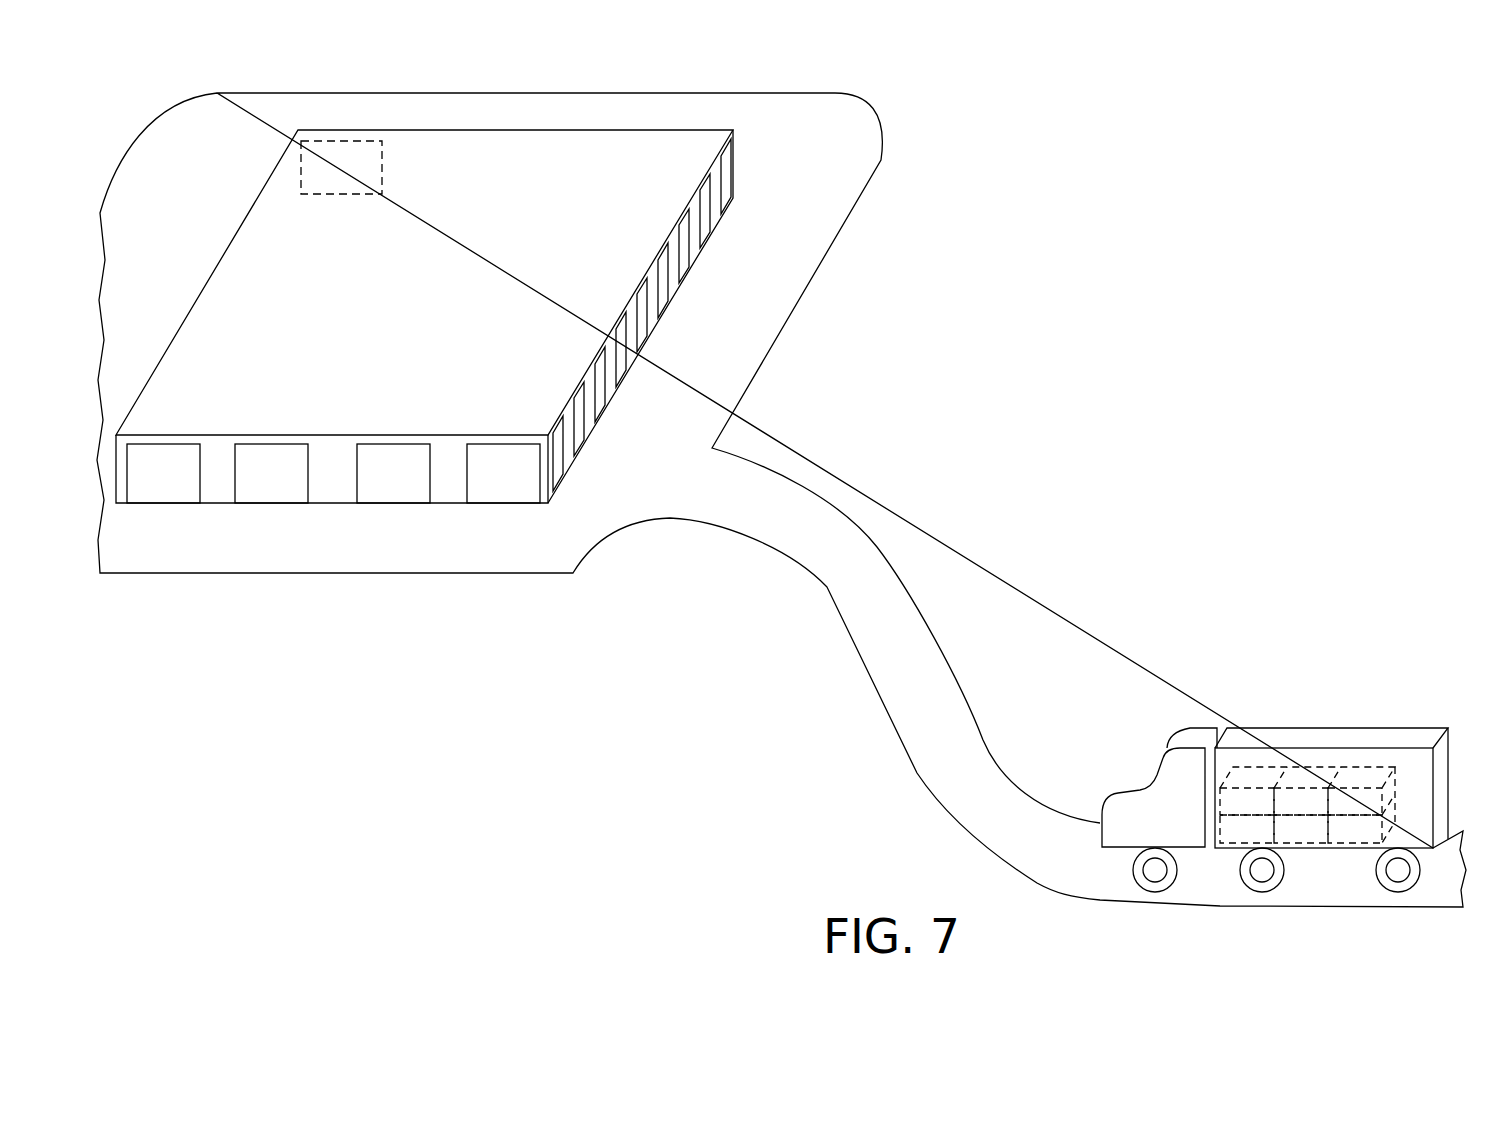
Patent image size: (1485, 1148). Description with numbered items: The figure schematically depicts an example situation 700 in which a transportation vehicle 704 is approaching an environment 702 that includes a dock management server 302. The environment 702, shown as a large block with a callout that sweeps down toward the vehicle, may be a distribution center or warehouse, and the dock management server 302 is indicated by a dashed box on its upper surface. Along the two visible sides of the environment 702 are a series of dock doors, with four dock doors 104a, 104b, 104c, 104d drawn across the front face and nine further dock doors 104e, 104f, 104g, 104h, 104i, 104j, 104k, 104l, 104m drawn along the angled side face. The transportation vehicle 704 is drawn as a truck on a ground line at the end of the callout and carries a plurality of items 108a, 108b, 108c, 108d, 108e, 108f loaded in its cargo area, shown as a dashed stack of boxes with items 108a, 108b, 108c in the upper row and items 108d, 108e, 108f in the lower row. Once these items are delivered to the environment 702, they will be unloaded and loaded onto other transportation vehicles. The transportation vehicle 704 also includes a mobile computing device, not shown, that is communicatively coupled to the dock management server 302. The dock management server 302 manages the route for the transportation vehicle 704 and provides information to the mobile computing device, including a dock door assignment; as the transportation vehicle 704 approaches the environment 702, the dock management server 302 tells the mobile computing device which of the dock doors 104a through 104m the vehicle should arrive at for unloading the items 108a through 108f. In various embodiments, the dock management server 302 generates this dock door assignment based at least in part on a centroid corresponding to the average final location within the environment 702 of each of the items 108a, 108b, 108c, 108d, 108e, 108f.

The system 700 is at (1287, 185).
The environment 702 is at (543, 128).
The dock management server 302 is at (366, 182).
The dock door 104a is at (160, 493).
The dock door 104b is at (270, 493).
The dock door 104c is at (392, 493).
The dock door 104d is at (500, 493).
The dock door 104e is at (564, 470).
The dock door 104f is at (585, 435).
The dock door 104g is at (606, 400).
The dock door 104h is at (627, 365).
The dock door 104i is at (648, 330).
The dock door 104j is at (669, 295).
The dock door 104k is at (690, 260).
The dock door 104l is at (711, 225).
The dock door 104m is at (726, 203).
The transportation vehicle 704 is at (1432, 733).
The item 108a is at (1245, 773).
The item 108b is at (1305, 773).
The item 108c is at (1366, 772).
The item 108d is at (1238, 830).
The item 108e is at (1305, 833).
The item 108f is at (1365, 830).